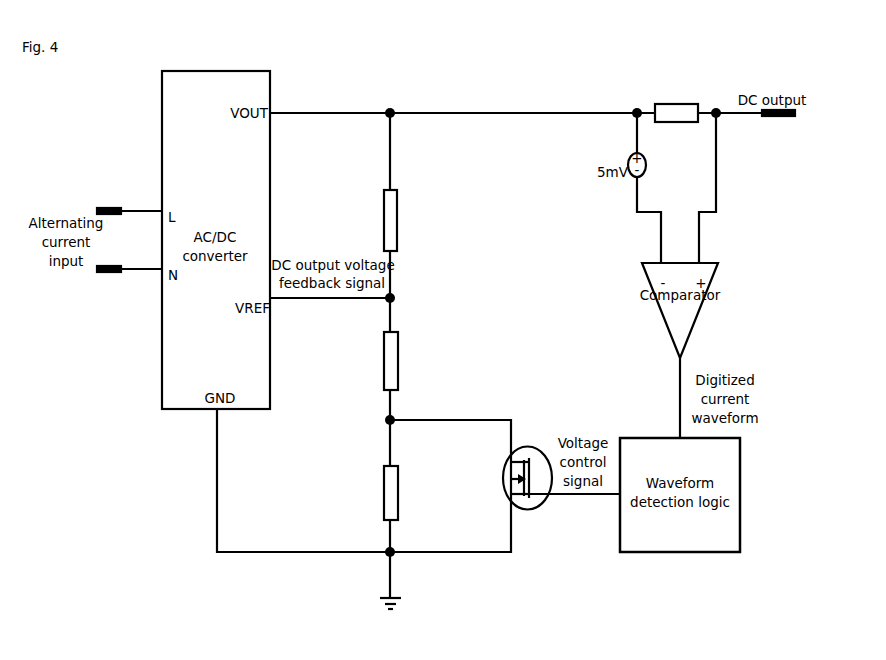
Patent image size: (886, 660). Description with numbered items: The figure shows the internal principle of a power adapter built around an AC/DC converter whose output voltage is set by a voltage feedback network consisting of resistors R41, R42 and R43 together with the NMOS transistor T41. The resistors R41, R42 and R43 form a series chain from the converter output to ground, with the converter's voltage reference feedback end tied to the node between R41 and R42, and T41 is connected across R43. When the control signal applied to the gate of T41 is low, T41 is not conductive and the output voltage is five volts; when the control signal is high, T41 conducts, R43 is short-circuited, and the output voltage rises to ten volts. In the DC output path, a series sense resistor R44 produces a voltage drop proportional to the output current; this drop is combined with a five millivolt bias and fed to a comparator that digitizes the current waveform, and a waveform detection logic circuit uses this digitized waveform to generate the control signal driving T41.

The resistor R41 is at (407, 220).
The resistor R42 is at (407, 361).
The resistor R43 is at (407, 493).
The resistor R44 is at (676, 105).
The NMOS transistor T41 is at (514, 478).